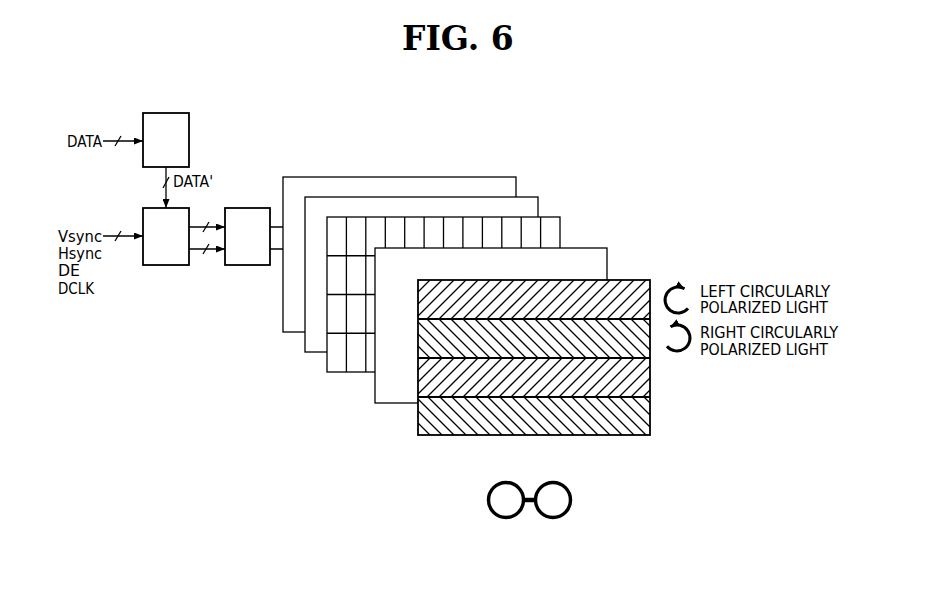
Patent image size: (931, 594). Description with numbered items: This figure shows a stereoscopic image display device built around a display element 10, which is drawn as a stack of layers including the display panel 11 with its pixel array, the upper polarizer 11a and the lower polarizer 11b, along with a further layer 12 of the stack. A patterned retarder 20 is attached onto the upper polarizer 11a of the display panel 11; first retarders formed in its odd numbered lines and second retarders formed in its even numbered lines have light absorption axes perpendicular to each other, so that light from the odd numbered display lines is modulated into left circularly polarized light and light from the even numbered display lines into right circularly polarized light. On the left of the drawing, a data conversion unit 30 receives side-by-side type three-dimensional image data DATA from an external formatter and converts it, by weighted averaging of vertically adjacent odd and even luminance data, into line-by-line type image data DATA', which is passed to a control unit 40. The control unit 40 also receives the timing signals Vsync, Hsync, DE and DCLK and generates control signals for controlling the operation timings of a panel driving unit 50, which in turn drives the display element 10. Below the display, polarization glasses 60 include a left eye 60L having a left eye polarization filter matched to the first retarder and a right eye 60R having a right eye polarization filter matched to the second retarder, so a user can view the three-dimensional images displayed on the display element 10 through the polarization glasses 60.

The data conversion unit 30 is at (166, 140).
The control unit 40 is at (166, 236).
The panel driving unit 50 is at (247, 236).
The display element 10 is at (453, 266).
The backlight / lower polarizer 12 is at (510, 177).
The lower polarizer 11b is at (529, 197).
The display panel 11 is at (552, 217).
The upper polarizer 11a is at (499, 306).
The patterned retarder 20 is at (624, 280).
The polarization glasses 60 is at (569, 525).
The left eye 60L is at (506, 518).
The right eye 60R is at (553, 518).